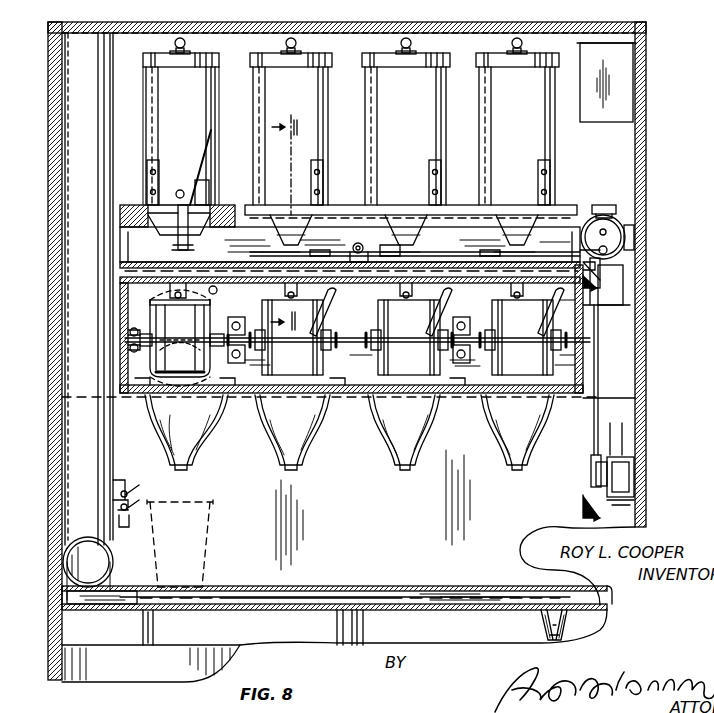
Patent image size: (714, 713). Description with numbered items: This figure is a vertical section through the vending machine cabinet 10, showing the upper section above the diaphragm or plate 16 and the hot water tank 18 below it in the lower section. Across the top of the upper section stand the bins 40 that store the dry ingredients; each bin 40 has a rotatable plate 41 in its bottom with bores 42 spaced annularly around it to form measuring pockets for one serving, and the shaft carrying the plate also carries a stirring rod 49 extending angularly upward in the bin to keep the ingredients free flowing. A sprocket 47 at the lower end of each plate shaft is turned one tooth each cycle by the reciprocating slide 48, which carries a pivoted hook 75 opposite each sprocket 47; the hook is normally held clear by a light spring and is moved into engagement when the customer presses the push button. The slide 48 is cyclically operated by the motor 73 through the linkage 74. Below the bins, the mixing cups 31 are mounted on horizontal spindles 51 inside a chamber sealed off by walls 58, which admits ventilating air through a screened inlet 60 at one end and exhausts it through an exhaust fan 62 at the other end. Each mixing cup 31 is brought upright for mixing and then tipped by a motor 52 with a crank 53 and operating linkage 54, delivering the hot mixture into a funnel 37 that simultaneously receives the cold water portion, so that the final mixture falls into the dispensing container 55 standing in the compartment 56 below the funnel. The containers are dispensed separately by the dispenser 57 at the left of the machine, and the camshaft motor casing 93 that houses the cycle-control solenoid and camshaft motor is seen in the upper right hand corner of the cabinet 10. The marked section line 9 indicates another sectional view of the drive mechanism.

The cabinet 10 is at (62, 418).
The dispenser 57 is at (70, 243).
The bin 40 is at (215, 108).
The stirring rod 49 is at (205, 150).
The rotatable plate 41 is at (200, 186).
The bores 42 is at (203, 205).
The camshaft motor casing 93 is at (627, 85).
The reciprocating slide 48 is at (177, 230).
The pivoted hook 75 is at (150, 258).
The sprocket 47 is at (245, 240).
The linkage 74 is at (470, 252).
The motor 73 is at (590, 205).
The section line 9 is at (599, 401).
The exhaust fan 62 is at (608, 308).
The screened inlet 60 is at (120, 292).
The mixing cup 31 is at (210, 307).
The horizontal spindles 51 is at (355, 338).
The walls 58 is at (348, 390).
The operating linkage 54 is at (598, 378).
The motor 52 is at (635, 462).
The crank 53 is at (595, 472).
The funnel 37 is at (205, 428).
The dispensing container 55 is at (205, 545).
The hot water tank 18 is at (180, 645).
The compartment 56 is at (352, 585).
The plate 16 is at (395, 610).